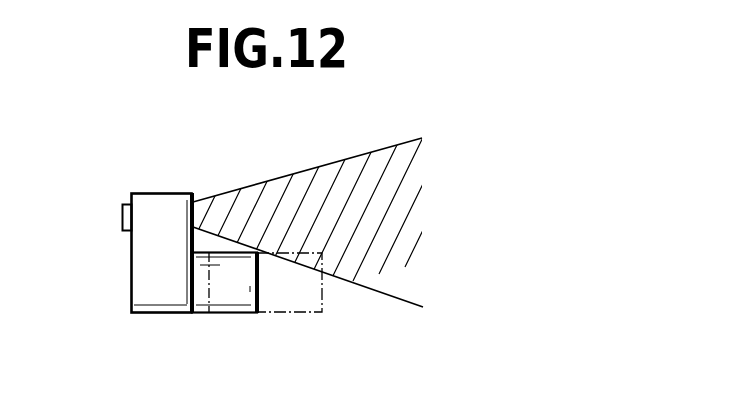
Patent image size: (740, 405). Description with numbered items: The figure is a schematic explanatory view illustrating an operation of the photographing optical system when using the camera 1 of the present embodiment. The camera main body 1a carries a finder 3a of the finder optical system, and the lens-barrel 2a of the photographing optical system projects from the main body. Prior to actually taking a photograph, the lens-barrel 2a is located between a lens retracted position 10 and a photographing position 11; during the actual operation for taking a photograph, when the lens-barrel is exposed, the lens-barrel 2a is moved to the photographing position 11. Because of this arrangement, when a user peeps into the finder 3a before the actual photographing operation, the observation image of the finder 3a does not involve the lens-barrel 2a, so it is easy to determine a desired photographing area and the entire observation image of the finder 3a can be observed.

The camera 1 is at (185, 178).
The camera main body 1a is at (158, 302).
The finder 3a is at (122, 220).
The lens-barrel 2a is at (238, 302).
The lens retracted position 10 is at (209, 313).
The photographing position 11 is at (323, 303).